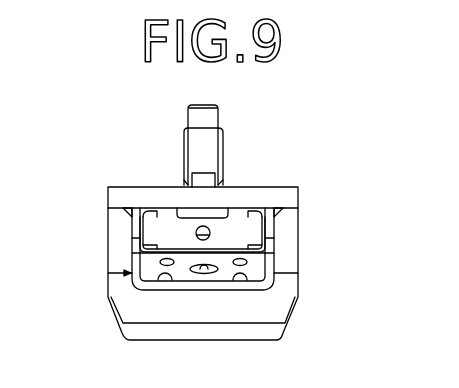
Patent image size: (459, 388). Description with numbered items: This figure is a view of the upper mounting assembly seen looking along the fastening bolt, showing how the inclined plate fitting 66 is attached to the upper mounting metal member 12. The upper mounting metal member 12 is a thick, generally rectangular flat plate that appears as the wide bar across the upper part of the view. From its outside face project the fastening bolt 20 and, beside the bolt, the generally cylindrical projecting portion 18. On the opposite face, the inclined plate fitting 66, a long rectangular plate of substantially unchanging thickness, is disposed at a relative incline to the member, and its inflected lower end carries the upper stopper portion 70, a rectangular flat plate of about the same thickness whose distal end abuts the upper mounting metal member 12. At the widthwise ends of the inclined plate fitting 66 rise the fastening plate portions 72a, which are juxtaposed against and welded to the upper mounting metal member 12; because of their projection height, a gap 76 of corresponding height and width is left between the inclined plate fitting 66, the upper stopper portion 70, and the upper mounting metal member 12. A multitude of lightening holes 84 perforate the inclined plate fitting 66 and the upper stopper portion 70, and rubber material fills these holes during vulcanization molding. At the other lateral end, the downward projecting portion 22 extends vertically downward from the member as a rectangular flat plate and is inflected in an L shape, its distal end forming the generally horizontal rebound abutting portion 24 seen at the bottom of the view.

The upper mounting metal member 12 is at (145, 197).
The fastening bolt 20 is at (195, 147).
The projecting portion 18 is at (205, 178).
The upper stopper portion 70 is at (238, 227).
The fastening plate portions 72a is at (135, 228).
The gap 76 is at (125, 273).
The downward projecting portion 22 is at (288, 255).
The lightening holes 84 is at (155, 275).
The inclined plate fitting 66 is at (222, 272).
The rebound abutting portion 24 is at (255, 313).